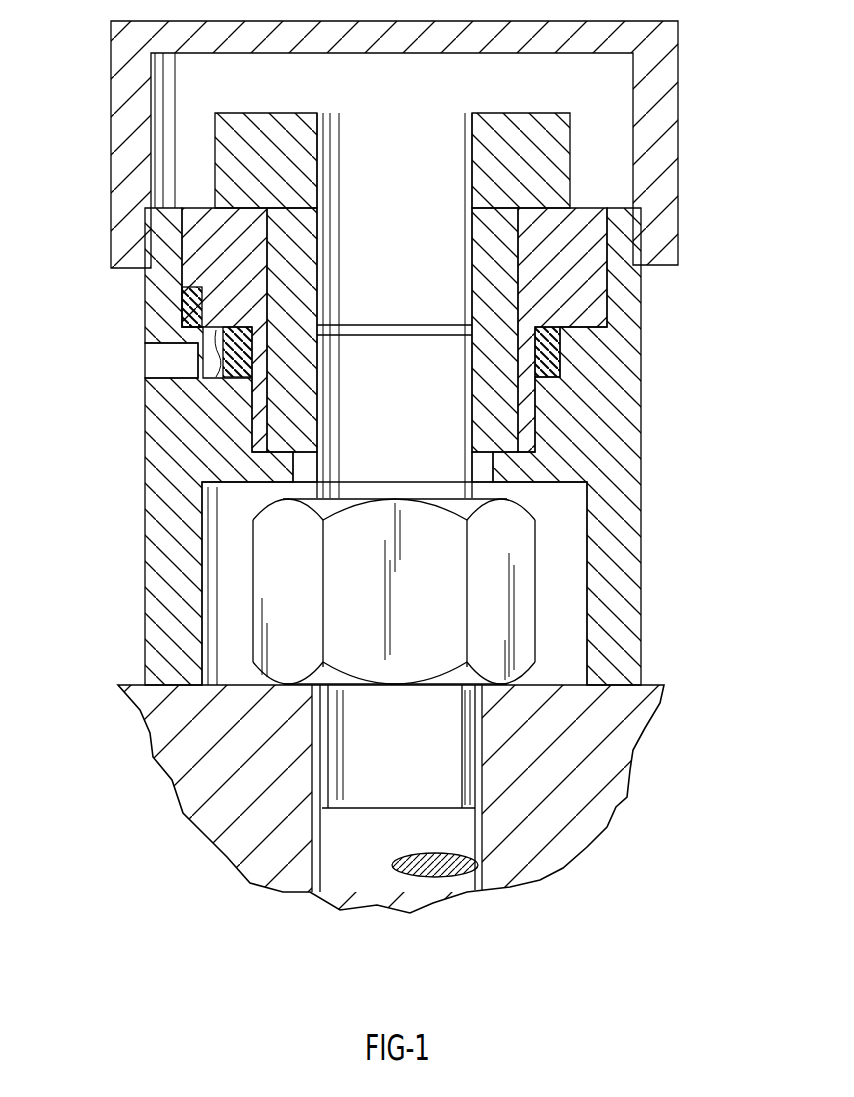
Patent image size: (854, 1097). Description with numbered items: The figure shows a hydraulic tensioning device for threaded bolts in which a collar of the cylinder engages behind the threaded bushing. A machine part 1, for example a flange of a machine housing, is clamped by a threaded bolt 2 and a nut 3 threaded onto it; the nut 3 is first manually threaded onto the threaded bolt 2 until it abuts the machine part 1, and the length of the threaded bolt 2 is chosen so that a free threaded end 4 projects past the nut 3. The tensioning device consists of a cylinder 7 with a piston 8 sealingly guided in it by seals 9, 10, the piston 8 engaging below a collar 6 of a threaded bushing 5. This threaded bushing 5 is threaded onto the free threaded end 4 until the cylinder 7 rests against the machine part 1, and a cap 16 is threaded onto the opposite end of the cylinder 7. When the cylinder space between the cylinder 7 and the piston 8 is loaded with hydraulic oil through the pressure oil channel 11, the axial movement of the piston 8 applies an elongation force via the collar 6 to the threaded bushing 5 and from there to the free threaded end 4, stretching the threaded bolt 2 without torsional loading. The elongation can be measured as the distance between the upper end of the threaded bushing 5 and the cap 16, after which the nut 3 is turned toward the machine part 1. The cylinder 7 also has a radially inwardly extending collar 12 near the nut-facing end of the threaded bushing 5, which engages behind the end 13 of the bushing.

The machine part 1 is at (605, 740).
The threaded bolt 2 is at (458, 835).
The nut 3 is at (518, 636).
The free threaded end 4 is at (443, 391).
The threaded bushing 5 is at (508, 257).
The collar 6 is at (550, 149).
The cylinder 7 is at (597, 545).
The piston 8 is at (230, 317).
The seal 9 is at (228, 312).
The seal 10 is at (223, 367).
The pressure oil channel 11 is at (172, 360).
The radially inwardly extending collar 12 is at (290, 465).
The end of the bushing 13 is at (205, 500).
The cap 16 is at (664, 61).